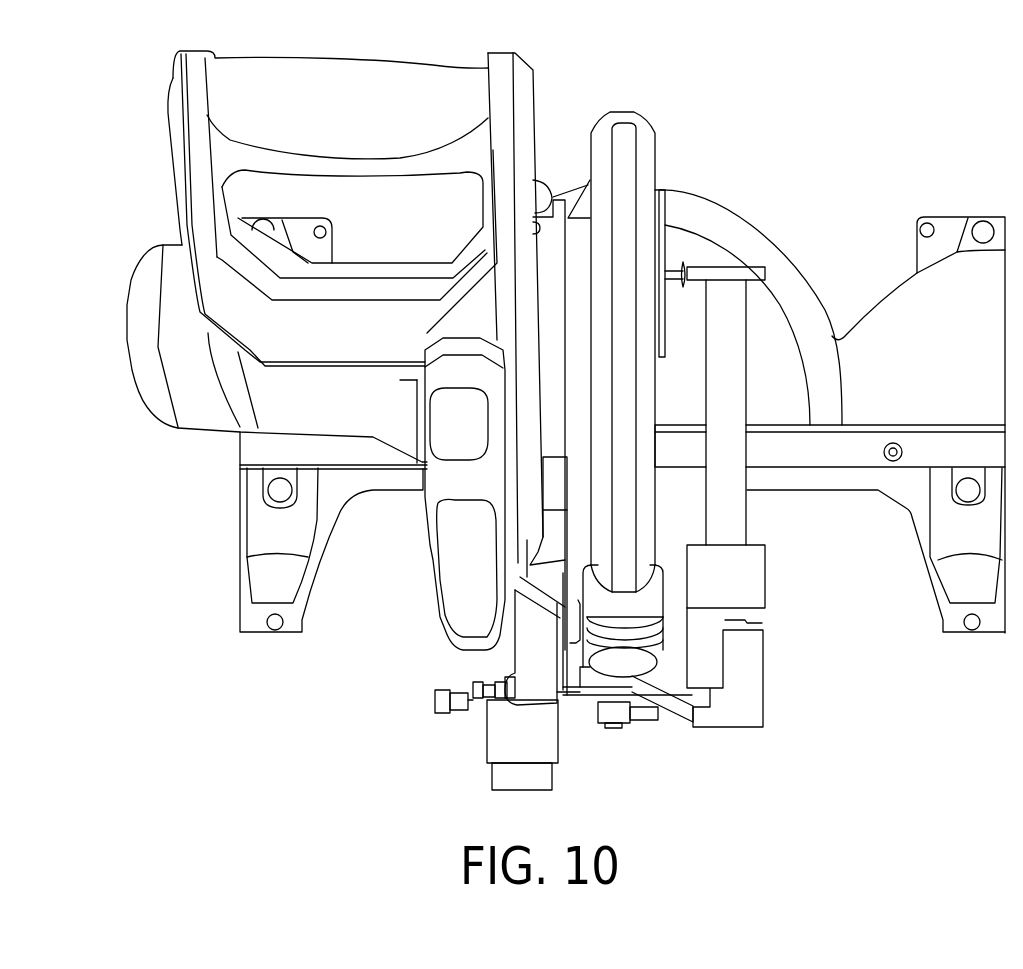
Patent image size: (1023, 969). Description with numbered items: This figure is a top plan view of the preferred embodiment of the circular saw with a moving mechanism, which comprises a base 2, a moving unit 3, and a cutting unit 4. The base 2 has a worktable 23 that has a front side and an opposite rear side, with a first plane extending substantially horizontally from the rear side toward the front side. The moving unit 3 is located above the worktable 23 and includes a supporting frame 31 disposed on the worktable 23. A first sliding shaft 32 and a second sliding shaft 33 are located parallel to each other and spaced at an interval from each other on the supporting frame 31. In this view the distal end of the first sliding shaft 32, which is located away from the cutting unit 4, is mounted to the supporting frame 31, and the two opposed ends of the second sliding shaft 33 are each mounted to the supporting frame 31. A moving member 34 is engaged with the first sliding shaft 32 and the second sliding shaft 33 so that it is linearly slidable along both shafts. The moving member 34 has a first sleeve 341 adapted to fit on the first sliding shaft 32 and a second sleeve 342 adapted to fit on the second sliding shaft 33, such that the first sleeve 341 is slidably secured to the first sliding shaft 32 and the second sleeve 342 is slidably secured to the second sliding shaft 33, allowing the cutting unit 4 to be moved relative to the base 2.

The base 2 is at (782, 238).
The worktable 23 is at (688, 247).
The moving unit 3 is at (773, 710).
The supporting frame 31 is at (503, 780).
The first sliding shaft 32 is at (737, 507).
The second sliding shaft 33 is at (508, 667).
The moving member 34 is at (670, 667).
The first sleeve 341 is at (753, 590).
The second sleeve 342 is at (495, 748).
The cutting unit 4 is at (222, 445).